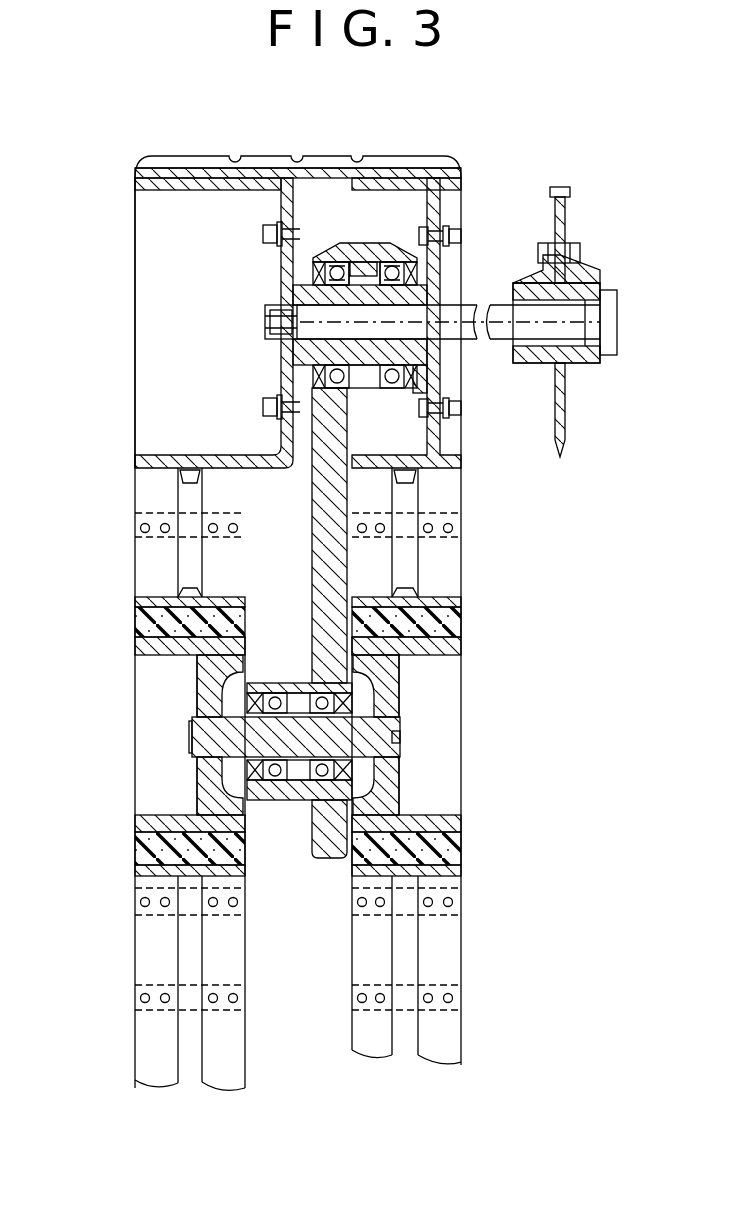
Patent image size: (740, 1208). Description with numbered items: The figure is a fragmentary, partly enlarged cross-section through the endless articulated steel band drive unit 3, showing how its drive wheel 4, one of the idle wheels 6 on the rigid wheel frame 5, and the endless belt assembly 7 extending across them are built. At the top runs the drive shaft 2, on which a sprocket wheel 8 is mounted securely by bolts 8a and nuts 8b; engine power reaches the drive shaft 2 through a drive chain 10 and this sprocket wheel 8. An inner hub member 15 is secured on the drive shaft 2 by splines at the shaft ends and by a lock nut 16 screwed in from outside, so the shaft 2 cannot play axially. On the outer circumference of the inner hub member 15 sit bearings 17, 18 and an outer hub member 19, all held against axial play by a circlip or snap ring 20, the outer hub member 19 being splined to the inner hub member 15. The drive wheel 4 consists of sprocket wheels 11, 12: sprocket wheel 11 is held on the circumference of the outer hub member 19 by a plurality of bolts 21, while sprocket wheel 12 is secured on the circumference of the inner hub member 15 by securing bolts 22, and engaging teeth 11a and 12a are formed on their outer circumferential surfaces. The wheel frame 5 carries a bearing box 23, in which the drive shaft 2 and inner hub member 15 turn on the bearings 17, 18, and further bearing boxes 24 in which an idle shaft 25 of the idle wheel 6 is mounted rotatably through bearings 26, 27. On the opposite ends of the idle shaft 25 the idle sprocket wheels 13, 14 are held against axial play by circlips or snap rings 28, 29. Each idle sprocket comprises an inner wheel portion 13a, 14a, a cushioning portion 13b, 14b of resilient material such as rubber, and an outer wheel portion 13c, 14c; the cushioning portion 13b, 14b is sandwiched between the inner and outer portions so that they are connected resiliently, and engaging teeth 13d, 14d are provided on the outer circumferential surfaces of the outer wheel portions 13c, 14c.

The drive shaft 2 is at (510, 328).
The endless articulated steel band drive unit 3 is at (130, 171).
The drive wheel 4 is at (132, 380).
The wheel frame 5 is at (318, 572).
The idle wheel 6 is at (132, 620).
The endless belt assembly 7 is at (466, 557).
The sprocket wheel 8 is at (566, 228).
The bolts 8a is at (582, 256).
The nuts 8b is at (550, 243).
The drive chain 10 is at (557, 187).
The sprocket wheel 11 is at (160, 288).
The engaging teeth 11a is at (184, 180).
The sprocket wheel 12 is at (452, 290).
The engaging teeth 12a is at (406, 178).
The idle sprocket wheel 13 is at (175, 667).
The inner wheel portion 13a is at (162, 748).
The cushioning portion 13b is at (137, 858).
The outer wheel portion 13c is at (138, 876).
The engaging teeth 13d is at (178, 592).
The idle sprocket wheel 14 is at (431, 690).
The inner wheel portion 14a is at (437, 803).
The cushioning portion 14b is at (463, 848).
The outer wheel portion 14c is at (440, 876).
The engaging teeth 14d is at (418, 592).
The inner hub member 15 is at (283, 272).
The lock nut 16 is at (265, 325).
The bearing 17 is at (333, 264).
The bearing 18 is at (392, 264).
The outer hub member 19 is at (283, 380).
The circlip or snap ring 20 is at (287, 288).
The bolts 21 is at (262, 235).
The securing bolts 22 is at (465, 236).
The bearing box 23 is at (355, 245).
The bearing boxes 24 is at (417, 478).
The idle shaft 25 is at (305, 752).
The bearing 26 is at (280, 693).
The bearing 27 is at (313, 683).
The circlip or snap ring 28 is at (190, 724).
The circlip or snap ring 29 is at (400, 757).